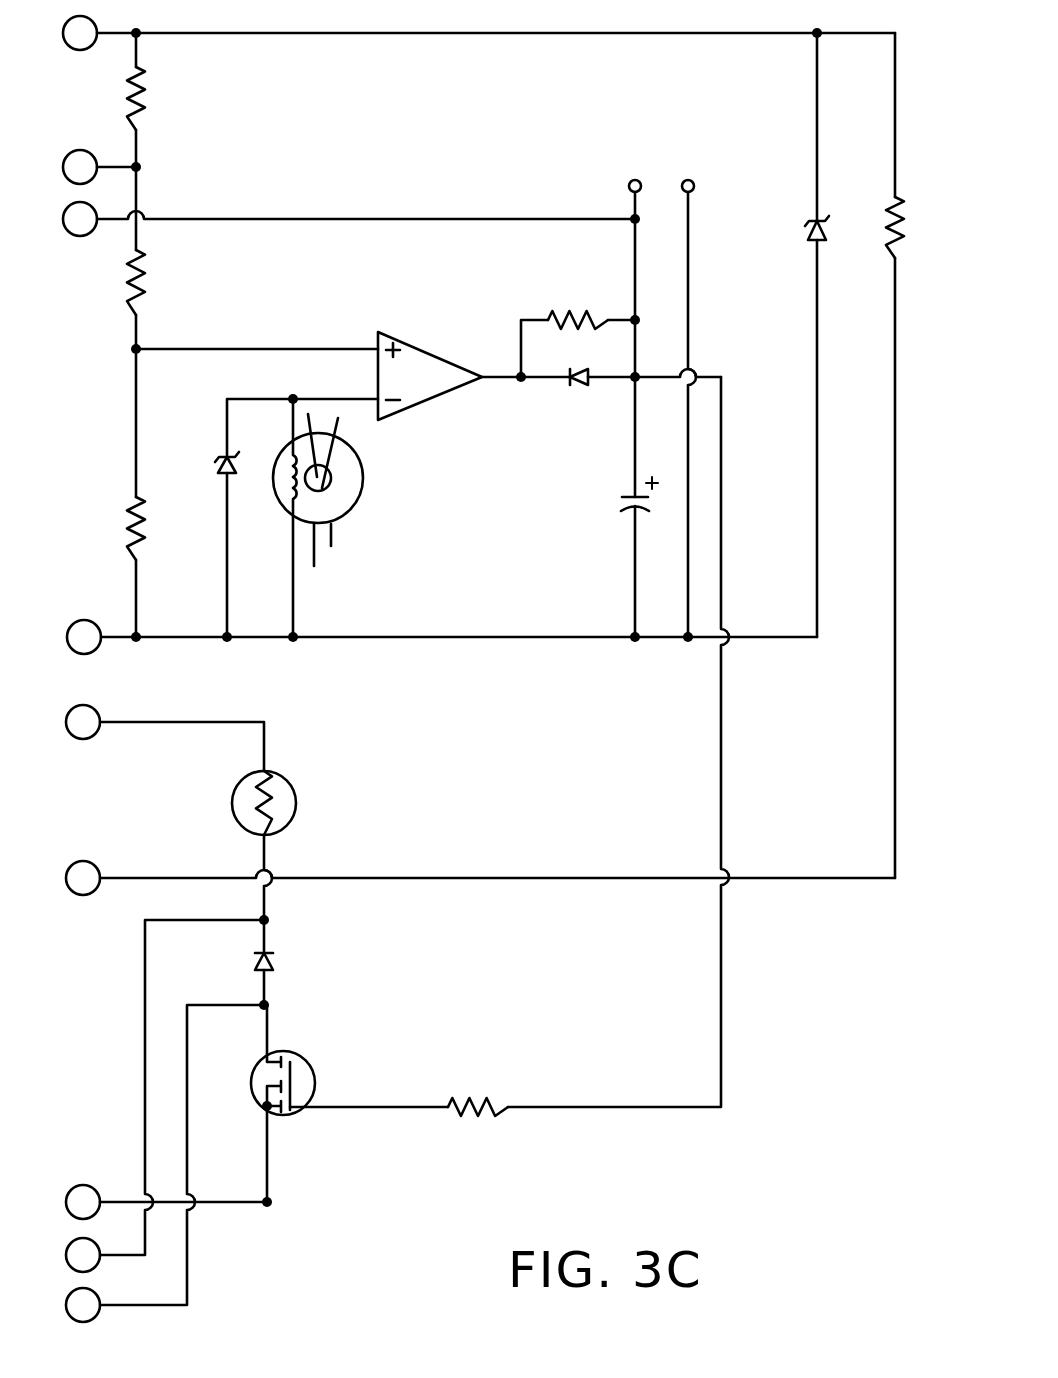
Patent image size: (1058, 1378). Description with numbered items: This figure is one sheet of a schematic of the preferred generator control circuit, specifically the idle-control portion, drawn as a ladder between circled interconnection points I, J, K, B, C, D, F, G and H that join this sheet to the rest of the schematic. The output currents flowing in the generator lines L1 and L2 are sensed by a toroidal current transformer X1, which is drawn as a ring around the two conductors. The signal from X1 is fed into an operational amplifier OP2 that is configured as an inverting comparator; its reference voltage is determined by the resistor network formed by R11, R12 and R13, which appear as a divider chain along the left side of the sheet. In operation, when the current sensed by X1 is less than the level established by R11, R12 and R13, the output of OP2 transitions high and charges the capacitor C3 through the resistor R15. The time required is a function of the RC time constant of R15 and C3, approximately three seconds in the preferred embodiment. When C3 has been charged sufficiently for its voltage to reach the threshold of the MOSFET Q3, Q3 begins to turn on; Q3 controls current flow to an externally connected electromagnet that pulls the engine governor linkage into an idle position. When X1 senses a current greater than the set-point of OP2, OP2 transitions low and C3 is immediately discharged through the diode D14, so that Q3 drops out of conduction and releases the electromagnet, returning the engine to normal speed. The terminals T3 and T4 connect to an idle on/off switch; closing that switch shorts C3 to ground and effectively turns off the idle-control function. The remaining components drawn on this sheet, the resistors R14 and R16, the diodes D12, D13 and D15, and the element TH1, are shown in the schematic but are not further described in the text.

The resistor R11 is at (172, 98).
The resistor R12 is at (172, 282).
The resistor R13 is at (168, 528).
The resistor R14 is at (399, 1088).
The resistor R15 is at (578, 325).
The resistor R16 is at (924, 227).
The zener diode D12 is at (201, 446).
The diode D13 is at (238, 962).
The diode D14 is at (601, 393).
The zener diode D15 is at (790, 240).
The capacitor C3 is at (624, 508).
The operational amplifier OP2 is at (430, 360).
The toroidal current transformer X1 is at (342, 468).
The output line L1 is at (349, 560).
The output line L2 is at (365, 541).
The thermistor TH1 is at (298, 845).
The MOSFET Q3 is at (292, 1103).
The terminal T3 is at (633, 389).
The terminal T4 is at (687, 389).
The terminal I is at (99, 33).
The terminal J is at (99, 167).
The terminal K is at (349, 219).
The terminal B is at (442, 637).
The terminal C is at (165, 738).
The terminal D is at (480, 878).
The terminal F is at (166, 1202).
The terminal G is at (165, 1096).
The terminal H is at (165, 1163).